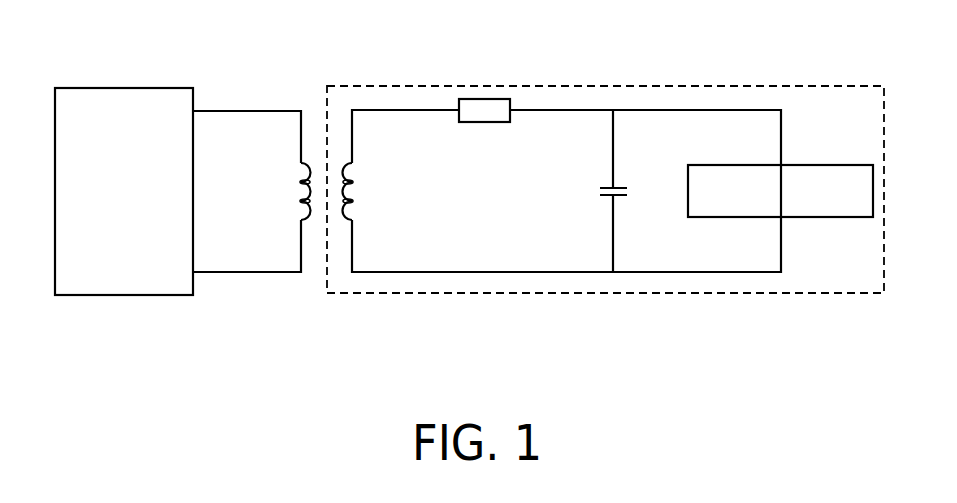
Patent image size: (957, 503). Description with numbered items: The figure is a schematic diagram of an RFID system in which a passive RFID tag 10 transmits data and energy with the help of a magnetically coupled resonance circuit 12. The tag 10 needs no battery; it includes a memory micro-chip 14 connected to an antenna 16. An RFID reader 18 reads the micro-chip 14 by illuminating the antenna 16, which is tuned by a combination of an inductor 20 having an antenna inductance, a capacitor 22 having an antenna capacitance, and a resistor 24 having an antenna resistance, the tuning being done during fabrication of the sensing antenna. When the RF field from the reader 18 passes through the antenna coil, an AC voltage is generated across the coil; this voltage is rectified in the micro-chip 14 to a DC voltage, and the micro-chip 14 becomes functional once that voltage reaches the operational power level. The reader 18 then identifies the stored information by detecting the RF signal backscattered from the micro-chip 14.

The RFID tag 10 is at (706, 85).
The magnetically coupled resonance circuit 12 is at (502, 272).
The memory micro-chip 14 is at (818, 165).
The antenna 16 is at (382, 110).
The RFID reader 18 is at (123, 88).
The inductor 20 is at (353, 200).
The capacitor 22 is at (608, 197).
The resistor 24 is at (487, 99).